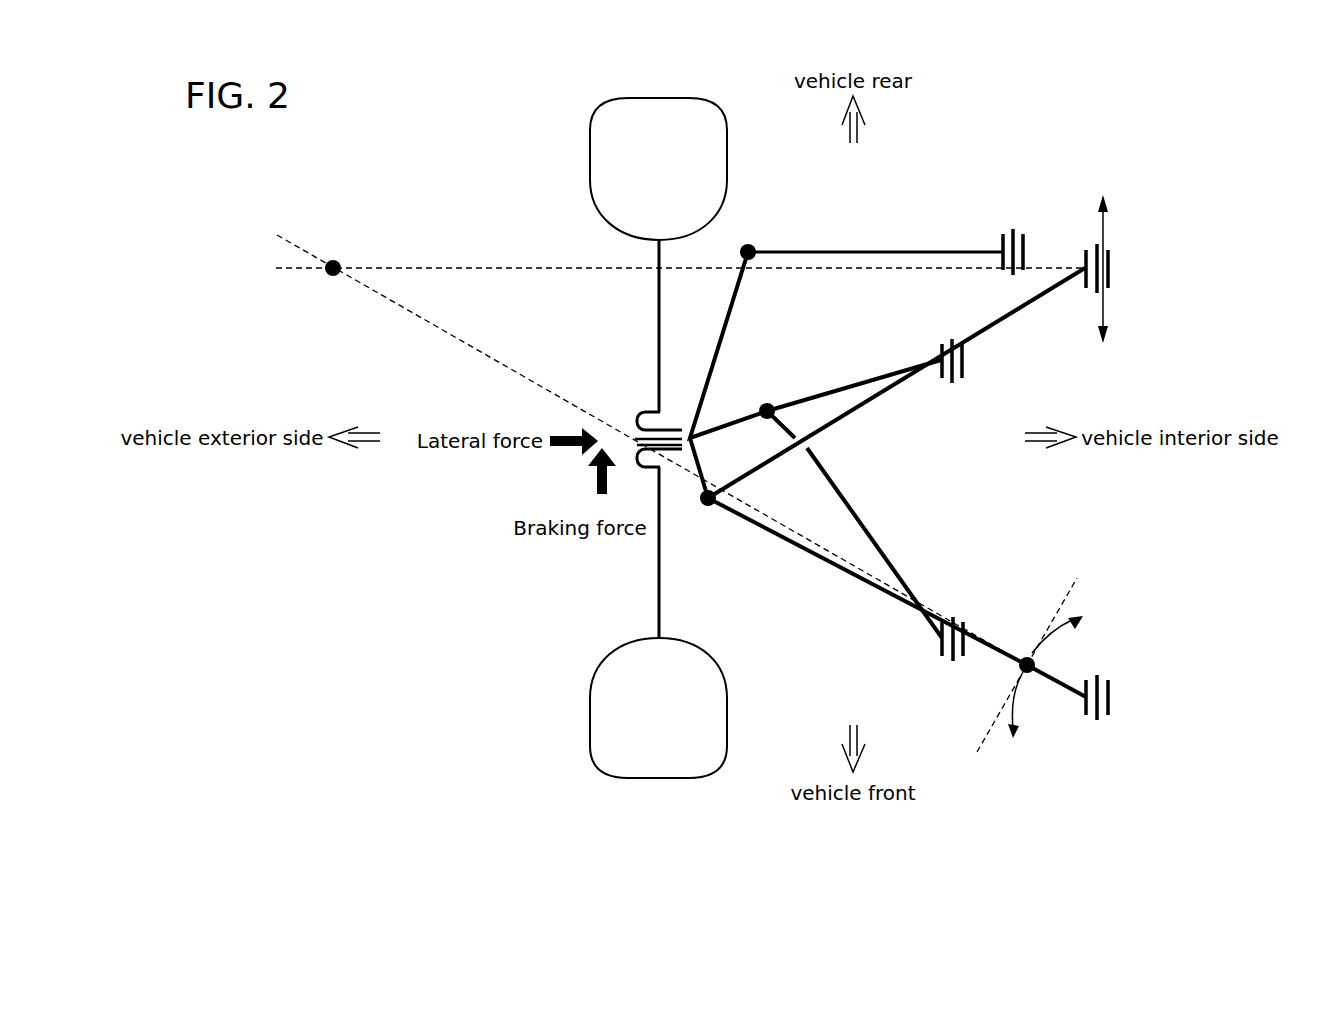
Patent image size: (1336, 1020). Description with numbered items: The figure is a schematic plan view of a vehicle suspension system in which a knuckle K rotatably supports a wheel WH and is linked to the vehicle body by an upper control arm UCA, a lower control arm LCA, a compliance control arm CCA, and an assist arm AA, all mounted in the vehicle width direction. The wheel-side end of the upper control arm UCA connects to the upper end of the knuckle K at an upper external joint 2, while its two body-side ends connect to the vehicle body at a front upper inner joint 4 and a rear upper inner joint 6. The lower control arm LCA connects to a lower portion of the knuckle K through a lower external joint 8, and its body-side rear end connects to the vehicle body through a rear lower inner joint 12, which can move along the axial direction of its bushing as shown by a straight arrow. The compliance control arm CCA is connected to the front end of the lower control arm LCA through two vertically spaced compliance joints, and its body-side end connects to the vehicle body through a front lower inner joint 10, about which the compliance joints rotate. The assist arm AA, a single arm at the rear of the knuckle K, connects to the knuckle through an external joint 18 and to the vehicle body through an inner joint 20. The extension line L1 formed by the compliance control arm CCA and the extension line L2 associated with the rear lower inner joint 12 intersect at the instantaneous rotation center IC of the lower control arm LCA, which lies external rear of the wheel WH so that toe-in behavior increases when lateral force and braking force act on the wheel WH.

The upper external joint 2 is at (708, 506).
The front upper inner joint 4 is at (940, 646).
The rear upper inner joint 6 is at (964, 360).
The lower external joint 8 is at (767, 402).
The front lower inner joint 10 is at (1110, 697).
The rear lower inner joint 12 is at (1110, 268).
The external joint 18 is at (749, 244).
The inner joint 20 is at (1025, 247).
The knuckle K is at (738, 296).
The assist arm AA is at (848, 250).
The upper control arm UCA is at (768, 465).
The lower control arm LCA is at (880, 365).
The compliance control arm CCA is at (1052, 690).
The wheel WH is at (590, 718).
The instantaneous rotation center IC is at (330, 278).
The extension line L1 is at (448, 335).
The extension line L2 is at (431, 267).